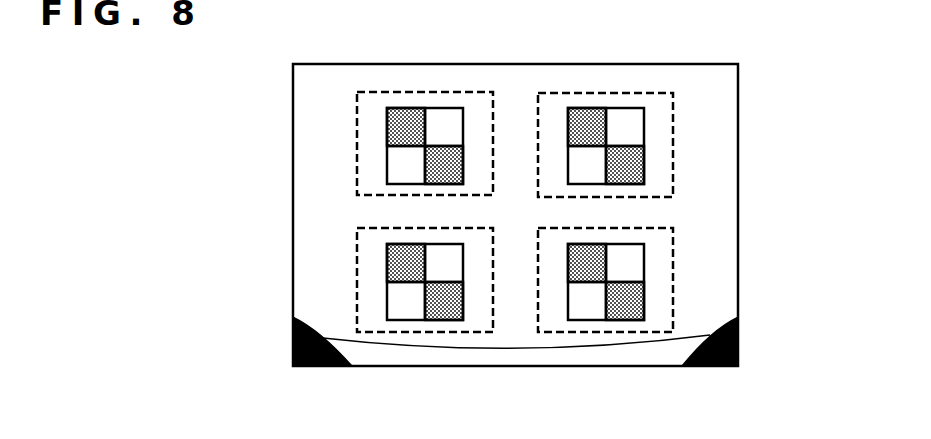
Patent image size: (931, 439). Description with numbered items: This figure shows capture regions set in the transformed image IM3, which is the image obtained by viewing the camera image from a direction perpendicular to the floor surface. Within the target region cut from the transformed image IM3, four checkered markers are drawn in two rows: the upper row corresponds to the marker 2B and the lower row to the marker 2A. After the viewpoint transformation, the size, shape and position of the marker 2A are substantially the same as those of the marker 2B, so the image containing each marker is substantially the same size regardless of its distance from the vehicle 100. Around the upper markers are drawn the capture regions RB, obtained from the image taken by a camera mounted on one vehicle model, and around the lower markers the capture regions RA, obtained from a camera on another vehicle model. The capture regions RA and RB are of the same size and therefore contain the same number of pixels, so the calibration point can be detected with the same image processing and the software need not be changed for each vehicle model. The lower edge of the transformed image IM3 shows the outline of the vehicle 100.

The marker 2B is at (446, 108).
The marker 2A is at (387, 271).
The capture region RB is at (368, 132).
The capture region RA is at (363, 302).
The transformed image IM3 is at (720, 155).
The vehicle 100 is at (498, 353).